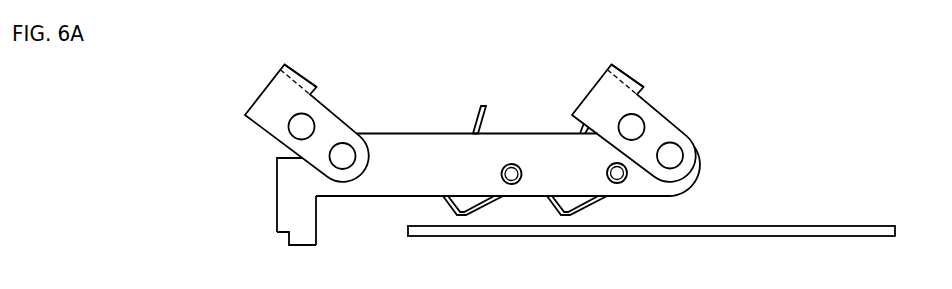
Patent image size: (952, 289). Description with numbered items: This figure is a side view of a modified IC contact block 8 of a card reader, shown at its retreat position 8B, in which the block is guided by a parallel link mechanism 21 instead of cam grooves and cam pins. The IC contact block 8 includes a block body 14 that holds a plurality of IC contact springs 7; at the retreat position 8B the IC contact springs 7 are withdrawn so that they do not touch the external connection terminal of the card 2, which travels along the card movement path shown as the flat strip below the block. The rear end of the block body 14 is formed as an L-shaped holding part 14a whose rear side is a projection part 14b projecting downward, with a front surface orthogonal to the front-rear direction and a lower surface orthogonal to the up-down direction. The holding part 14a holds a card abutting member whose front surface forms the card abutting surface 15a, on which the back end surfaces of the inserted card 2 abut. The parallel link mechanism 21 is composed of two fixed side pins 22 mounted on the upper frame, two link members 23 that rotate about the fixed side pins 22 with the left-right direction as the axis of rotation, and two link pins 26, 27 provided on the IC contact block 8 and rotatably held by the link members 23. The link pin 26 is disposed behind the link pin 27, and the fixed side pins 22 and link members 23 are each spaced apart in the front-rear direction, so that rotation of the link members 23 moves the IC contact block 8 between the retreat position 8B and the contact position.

The card 2 is at (813, 237).
The IC contact springs 7 is at (462, 216).
The IC contact block 8 is at (531, 99).
The retreat position 8B is at (528, 133).
The block body 14 is at (413, 133).
The holding part 14a is at (245, 201).
The projection part 14b is at (277, 215).
The card abutting surface 15a is at (316, 238).
The parallel link mechanism 21 is at (718, 62).
The fixed side pins 22 is at (289, 126).
The link members 23 is at (285, 64).
The link pin 26 is at (330, 157).
The link pin 27 is at (683, 156).